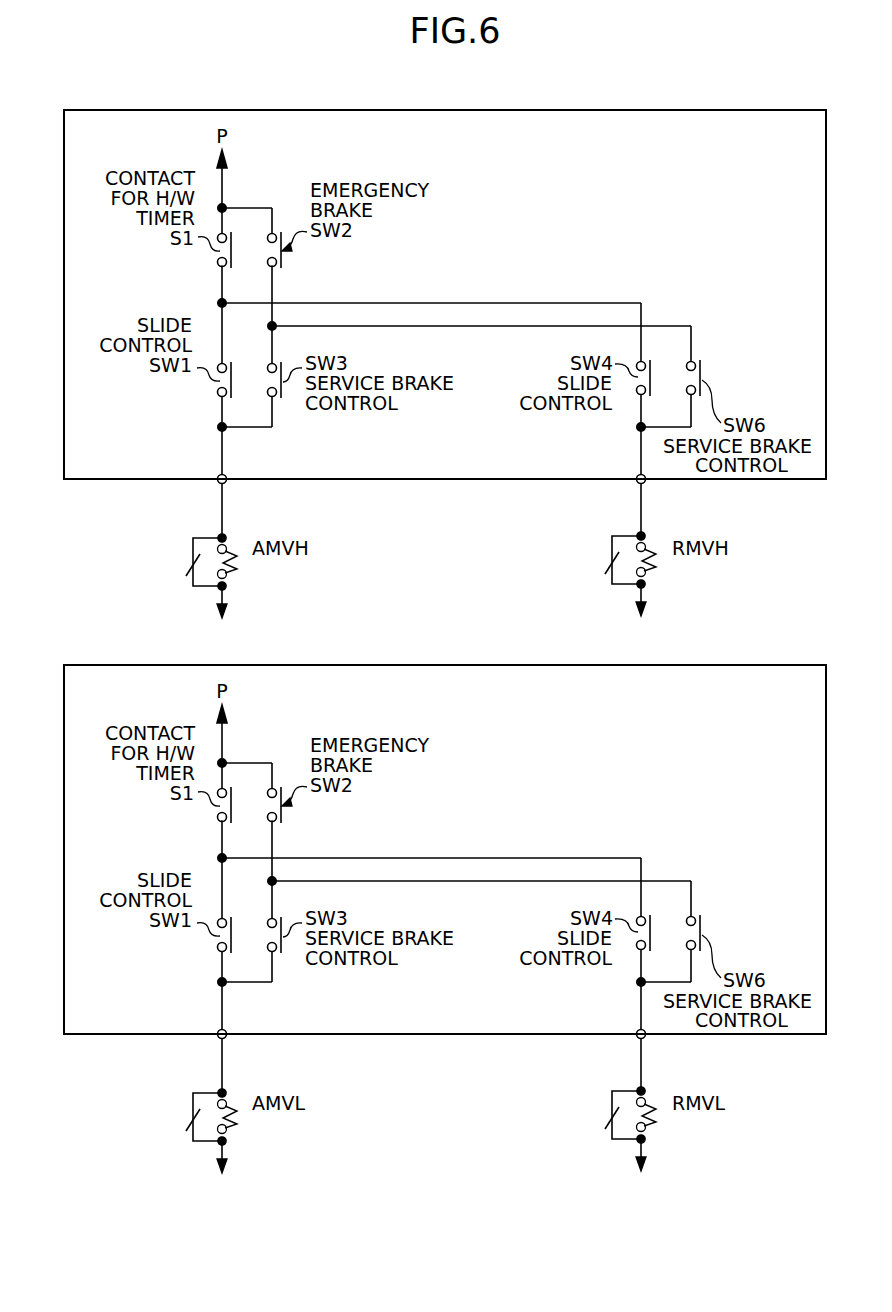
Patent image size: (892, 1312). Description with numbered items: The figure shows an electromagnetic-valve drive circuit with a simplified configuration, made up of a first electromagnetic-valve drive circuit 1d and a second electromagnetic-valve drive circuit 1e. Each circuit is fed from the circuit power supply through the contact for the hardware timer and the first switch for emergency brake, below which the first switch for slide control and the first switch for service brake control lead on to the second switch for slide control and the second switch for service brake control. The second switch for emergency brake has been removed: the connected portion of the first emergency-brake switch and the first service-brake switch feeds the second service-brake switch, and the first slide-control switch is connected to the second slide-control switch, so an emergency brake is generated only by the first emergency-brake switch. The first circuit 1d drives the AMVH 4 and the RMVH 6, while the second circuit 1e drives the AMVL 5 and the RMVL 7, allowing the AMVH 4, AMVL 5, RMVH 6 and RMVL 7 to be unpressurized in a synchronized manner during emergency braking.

The first electromagnetic-valve drive circuit 1d is at (438, 110).
The second electromagnetic-valve drive circuit 1e is at (438, 665).
The AMVH (Apply Magnet Valve High: first supply valve) 4 is at (227, 550).
The AMVL (Apply Magnet Valve Low: second supply valve) 5 is at (227, 1105).
The RMVH (Release Magnet Valve High: first exhaust valve) 6 is at (646, 548).
The RMVL (Release Magnet Valve Low: second exhaust valve) 7 is at (646, 1103).